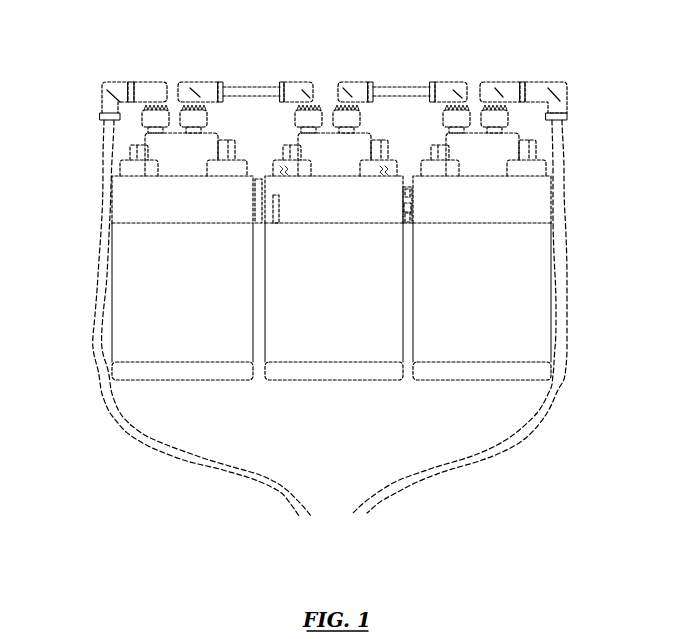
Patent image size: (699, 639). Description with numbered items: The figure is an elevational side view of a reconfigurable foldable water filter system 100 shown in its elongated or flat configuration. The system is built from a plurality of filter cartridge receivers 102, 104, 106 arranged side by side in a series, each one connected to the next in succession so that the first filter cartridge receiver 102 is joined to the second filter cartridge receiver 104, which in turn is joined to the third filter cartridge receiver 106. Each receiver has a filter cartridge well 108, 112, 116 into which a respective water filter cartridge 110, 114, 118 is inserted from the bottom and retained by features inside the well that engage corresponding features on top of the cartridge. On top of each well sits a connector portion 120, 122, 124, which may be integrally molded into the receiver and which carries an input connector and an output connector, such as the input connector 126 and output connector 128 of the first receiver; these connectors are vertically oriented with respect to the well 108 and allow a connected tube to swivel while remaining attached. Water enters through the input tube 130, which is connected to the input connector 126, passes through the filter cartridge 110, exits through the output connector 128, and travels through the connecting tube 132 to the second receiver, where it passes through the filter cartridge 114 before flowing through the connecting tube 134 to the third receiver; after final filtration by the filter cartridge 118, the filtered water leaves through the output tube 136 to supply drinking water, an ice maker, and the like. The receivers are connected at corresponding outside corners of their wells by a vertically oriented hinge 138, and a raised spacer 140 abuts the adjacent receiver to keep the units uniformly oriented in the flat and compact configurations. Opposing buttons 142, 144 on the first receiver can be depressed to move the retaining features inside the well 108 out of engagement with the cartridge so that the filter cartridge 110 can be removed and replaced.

The water filter system 100 is at (686, 45).
The filter cartridge receiver 102 is at (117, 193).
The filter cartridge receiver 104 is at (263, 178).
The filter cartridge receiver 106 is at (551, 200).
The filter cartridge well 108 is at (120, 212).
The water filter cartridge 110 is at (226, 380).
The filter cartridge well 112 is at (302, 225).
The water filter cartridge 114 is at (365, 380).
The filter cartridge well 116 is at (550, 215).
The water filter cartridge 118 is at (493, 380).
The connector portion 120 is at (176, 135).
The connector portion 122 is at (327, 134).
The connector portion 124 is at (478, 134).
The input connector 126 is at (155, 112).
The output connector 128 is at (205, 114).
The input tube 130 is at (95, 302).
The connecting tube 132 is at (266, 84).
The connecting tube 134 is at (405, 86).
The output tube 136 is at (568, 298).
The hinge 138 is at (413, 207).
The raised spacer 140 is at (275, 210).
The button 142 is at (133, 153).
The button 144 is at (232, 150).